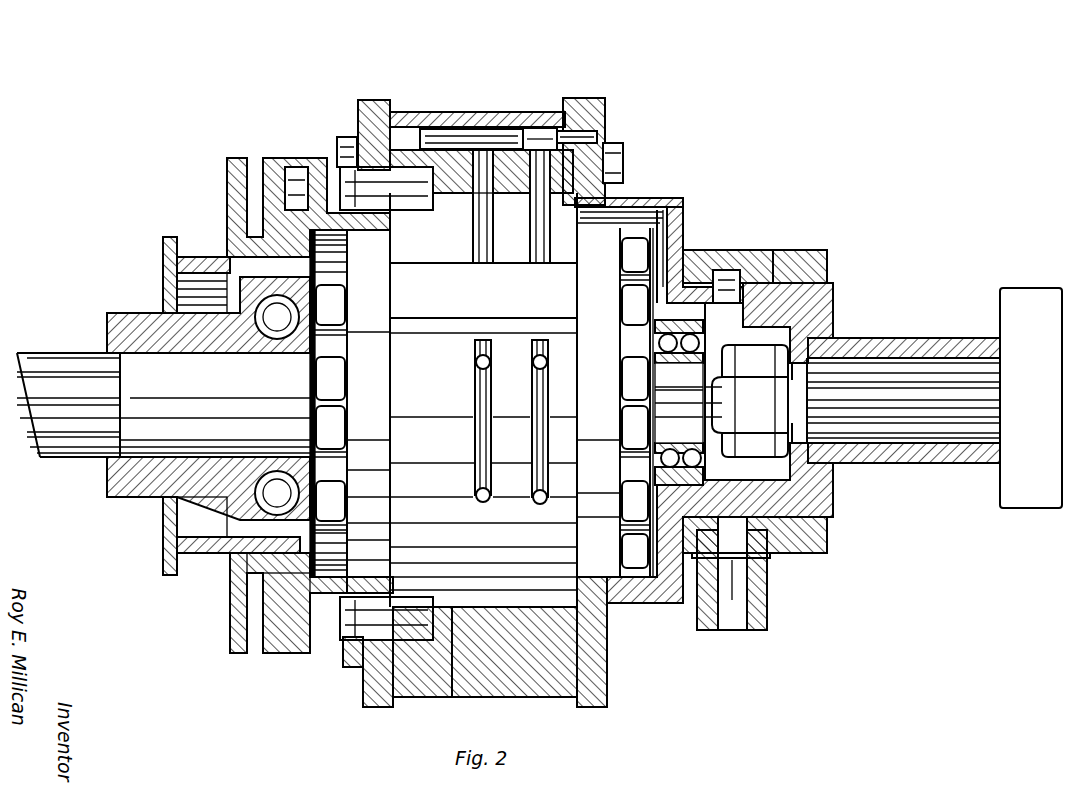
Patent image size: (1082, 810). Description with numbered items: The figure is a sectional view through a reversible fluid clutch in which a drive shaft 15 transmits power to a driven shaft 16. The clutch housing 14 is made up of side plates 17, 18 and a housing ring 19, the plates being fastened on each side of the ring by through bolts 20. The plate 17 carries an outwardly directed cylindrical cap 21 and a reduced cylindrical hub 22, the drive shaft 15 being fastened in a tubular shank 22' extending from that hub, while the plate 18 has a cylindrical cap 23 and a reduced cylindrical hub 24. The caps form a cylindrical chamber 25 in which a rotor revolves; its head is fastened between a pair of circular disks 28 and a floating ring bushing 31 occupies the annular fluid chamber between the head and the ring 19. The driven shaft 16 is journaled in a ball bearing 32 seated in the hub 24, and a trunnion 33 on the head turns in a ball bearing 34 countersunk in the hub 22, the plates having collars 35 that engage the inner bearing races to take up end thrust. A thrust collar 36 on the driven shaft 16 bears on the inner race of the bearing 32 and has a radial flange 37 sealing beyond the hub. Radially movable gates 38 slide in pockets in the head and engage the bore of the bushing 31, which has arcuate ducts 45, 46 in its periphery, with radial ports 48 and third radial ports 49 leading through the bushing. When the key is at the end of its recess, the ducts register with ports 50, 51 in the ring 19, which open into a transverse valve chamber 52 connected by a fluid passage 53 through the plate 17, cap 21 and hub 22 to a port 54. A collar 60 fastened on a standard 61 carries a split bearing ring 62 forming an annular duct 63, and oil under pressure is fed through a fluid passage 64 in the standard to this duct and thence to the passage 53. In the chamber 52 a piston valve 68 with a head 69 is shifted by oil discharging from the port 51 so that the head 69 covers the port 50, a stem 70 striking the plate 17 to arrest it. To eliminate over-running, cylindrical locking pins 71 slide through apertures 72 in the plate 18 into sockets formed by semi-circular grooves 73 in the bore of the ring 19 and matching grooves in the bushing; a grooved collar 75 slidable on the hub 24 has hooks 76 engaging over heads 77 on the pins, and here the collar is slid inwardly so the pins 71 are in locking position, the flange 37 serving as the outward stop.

The clutch housing 14 is at (405, 707).
The drive shaft 15 is at (943, 430).
The driven shaft 16 is at (58, 445).
The side plate 17 is at (590, 115).
The side plate 18 is at (368, 100).
The housing ring 19 is at (452, 112).
The through bolts 20 is at (622, 640).
The cylindrical cap 21 is at (655, 603).
The cylindrical hub 22 is at (813, 315).
The tubular shank 22' is at (904, 382).
The cylindrical cap 23 is at (355, 218).
The cylindrical hub 24 is at (198, 257).
The cylindrical chamber 25 is at (670, 228).
The circular disks 28 is at (330, 412).
The ring bushing 31 is at (413, 482).
The ball bearing 32 is at (262, 335).
The trunnion 33 is at (712, 395).
The ball bearing 34 is at (718, 430).
The collars 35 is at (316, 350).
The thrust collar 36 is at (130, 480).
The radial flange 37 is at (163, 268).
The gates 38 is at (557, 290).
The arcuate duct 45 is at (550, 242).
The arcuate duct 46 is at (475, 246).
The radial ports 48 is at (476, 495).
The third radial port 49 is at (484, 355).
The port 50 is at (623, 162).
The port 51 is at (473, 185).
The valve chamber 52 is at (403, 128).
The fluid passage 53 is at (665, 200).
The port 54 is at (738, 250).
The collar 60 is at (750, 255).
The standard 61 is at (767, 620).
The split bearing ring 62 is at (827, 530).
The annular duct 63 is at (767, 556).
The fluid passage 64 is at (733, 630).
The piston valve 68 is at (465, 130).
The head 69 is at (538, 128).
The stem 70 is at (596, 135).
The locking pins 71 is at (347, 167).
The apertures 72 is at (353, 667).
The semi-circular grooves 73 is at (440, 190).
The grooved collar 75 is at (232, 600).
The hooks 76 is at (297, 167).
The heads 77 is at (287, 653).